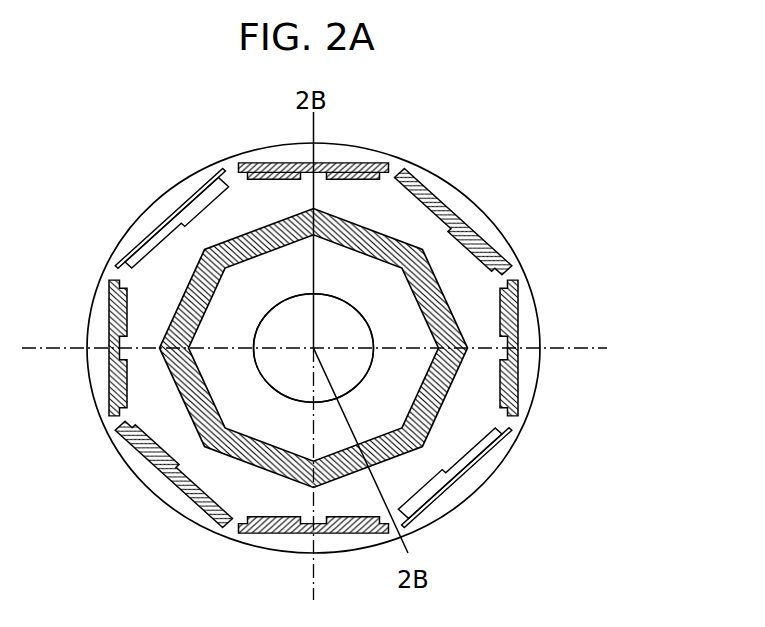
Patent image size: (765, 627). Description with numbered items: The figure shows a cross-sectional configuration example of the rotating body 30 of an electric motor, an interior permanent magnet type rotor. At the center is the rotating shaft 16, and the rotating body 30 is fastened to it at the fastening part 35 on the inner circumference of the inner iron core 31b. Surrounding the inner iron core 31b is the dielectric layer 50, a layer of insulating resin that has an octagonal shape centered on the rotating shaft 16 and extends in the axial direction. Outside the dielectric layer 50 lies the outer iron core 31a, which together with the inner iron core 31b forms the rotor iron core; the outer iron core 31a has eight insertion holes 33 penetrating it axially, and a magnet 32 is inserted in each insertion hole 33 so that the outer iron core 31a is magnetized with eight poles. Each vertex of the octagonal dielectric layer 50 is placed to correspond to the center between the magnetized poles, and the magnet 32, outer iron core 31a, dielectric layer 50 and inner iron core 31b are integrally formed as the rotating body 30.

The rotating shaft 16 is at (293, 368).
The rotating body 30 is at (163, 192).
The outer iron core 31a is at (425, 239).
The inner iron core 31b is at (400, 335).
The magnet 32 is at (390, 162).
The insertion hole 33 is at (340, 165).
The fastening part 35 is at (372, 370).
The dielectric layer 50 is at (430, 285).